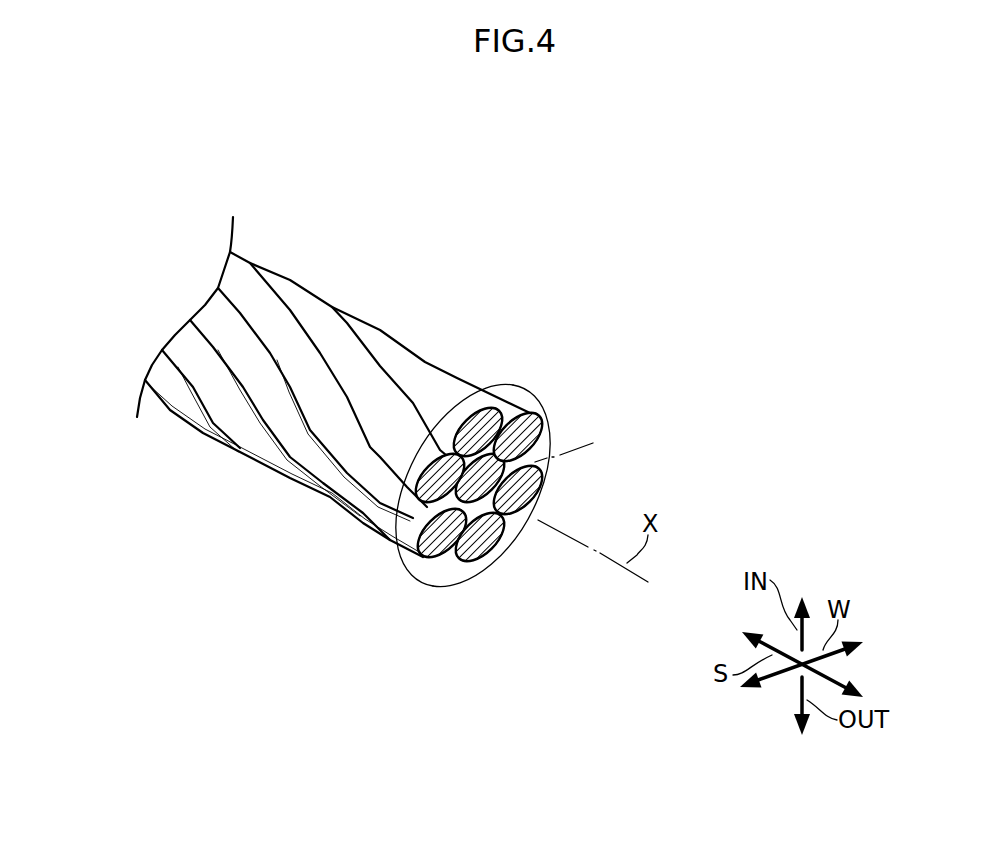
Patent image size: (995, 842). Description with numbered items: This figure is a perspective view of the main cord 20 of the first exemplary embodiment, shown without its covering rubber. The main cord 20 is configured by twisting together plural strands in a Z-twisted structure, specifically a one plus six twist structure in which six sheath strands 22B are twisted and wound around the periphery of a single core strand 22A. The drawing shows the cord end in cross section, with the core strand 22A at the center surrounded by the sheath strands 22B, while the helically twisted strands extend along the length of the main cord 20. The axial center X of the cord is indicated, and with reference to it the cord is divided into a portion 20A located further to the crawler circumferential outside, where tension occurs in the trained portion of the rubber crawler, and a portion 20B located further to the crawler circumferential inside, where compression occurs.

The main cord 20 is at (555, 393).
The portion further to the crawler circumferential outside than the axial center 20A is at (423, 578).
The portion further to the crawler circumferential inside than the axial center 20B is at (513, 385).
The core strand 22A is at (472, 499).
The sheath strand 22B is at (538, 433).